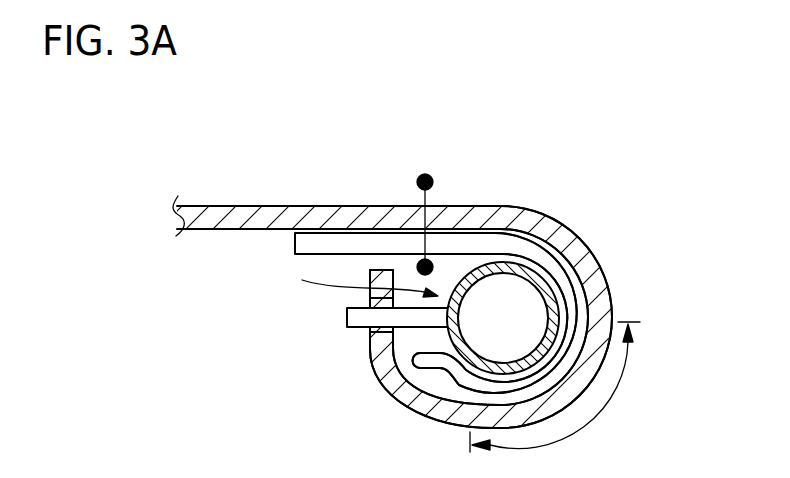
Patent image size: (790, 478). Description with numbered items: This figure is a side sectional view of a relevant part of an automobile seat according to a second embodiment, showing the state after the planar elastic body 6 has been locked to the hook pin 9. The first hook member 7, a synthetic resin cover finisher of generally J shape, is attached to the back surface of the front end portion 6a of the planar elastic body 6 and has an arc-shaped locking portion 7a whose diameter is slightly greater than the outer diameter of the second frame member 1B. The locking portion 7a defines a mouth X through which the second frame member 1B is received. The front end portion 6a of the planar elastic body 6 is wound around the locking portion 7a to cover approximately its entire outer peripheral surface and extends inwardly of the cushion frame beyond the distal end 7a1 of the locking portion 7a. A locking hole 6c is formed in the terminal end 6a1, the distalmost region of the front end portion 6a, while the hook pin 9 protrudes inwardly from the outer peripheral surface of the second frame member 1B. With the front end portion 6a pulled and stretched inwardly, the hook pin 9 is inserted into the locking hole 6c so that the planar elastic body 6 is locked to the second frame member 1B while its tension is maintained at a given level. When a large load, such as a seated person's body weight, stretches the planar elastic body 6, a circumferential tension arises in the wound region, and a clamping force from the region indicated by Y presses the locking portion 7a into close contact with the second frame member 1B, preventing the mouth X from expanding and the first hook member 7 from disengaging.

The planar elastic body 6 is at (240, 217).
The front end portion 6a is at (592, 377).
The terminal end 6a1 is at (380, 348).
The locking hole 6c is at (370, 332).
The first hook member 7 is at (453, 243).
The locking portion 7a is at (572, 300).
The distal end 7a1 is at (445, 377).
The hook pin 9 is at (352, 315).
The second frame member 1B is at (508, 295).
The mouth X is at (360, 282).
The region of the planar elastic body Y is at (568, 428).